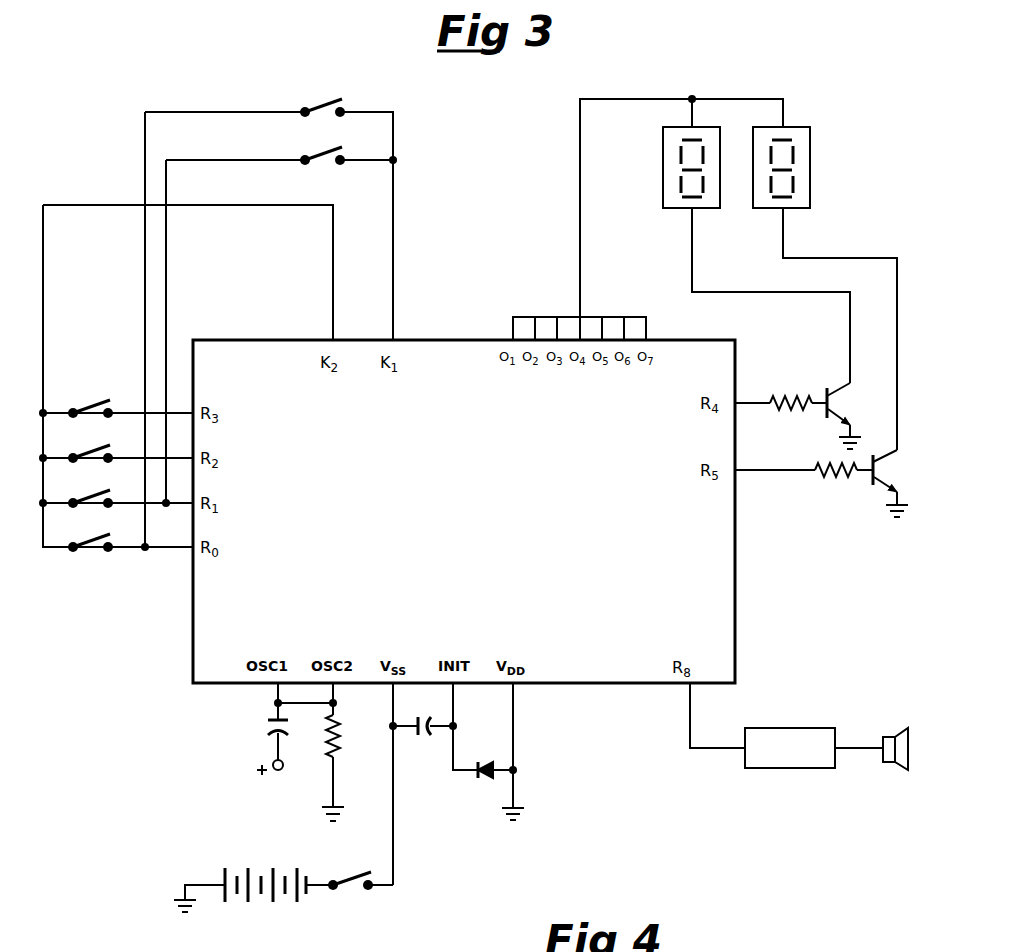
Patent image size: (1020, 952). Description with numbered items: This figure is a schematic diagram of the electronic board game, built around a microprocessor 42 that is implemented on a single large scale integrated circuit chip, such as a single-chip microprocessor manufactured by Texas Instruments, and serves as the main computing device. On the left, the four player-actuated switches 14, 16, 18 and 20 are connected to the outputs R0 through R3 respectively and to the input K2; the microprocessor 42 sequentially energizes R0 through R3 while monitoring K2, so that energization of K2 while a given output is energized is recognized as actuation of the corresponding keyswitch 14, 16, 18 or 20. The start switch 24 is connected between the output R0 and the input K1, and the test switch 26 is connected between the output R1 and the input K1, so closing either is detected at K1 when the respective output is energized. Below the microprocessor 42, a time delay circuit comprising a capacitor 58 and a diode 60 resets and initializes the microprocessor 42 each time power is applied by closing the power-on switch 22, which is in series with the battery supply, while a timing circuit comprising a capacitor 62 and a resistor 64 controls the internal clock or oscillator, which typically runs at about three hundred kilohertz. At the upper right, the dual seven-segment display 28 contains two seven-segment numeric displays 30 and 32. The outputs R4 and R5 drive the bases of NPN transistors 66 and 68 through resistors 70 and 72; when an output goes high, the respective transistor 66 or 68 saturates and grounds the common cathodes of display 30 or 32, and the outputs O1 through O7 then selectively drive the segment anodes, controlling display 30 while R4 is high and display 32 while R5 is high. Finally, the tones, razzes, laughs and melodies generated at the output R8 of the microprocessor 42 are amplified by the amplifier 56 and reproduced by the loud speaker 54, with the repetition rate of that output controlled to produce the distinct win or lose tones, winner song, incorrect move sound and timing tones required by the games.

The player-actuated switch 14 is at (98, 542).
The player-actuated switch 16 is at (98, 496).
The player-actuated switch 18 is at (96, 451).
The player-actuated switch 20 is at (92, 405).
The power-on switch 22 is at (352, 888).
The start switch 24 is at (326, 104).
The test switch 26 is at (326, 154).
The dual seven-segment display 28 is at (750, 88).
The seven-segment numeric display 30 is at (663, 153).
The seven-segment numeric display 32 is at (811, 139).
The microprocessor 42 is at (138, 605).
The loud speaker 54 is at (891, 767).
The amplifier 56 is at (794, 762).
The capacitor 58 is at (420, 738).
The diode 60 is at (486, 779).
The capacitor 62 is at (273, 733).
The resistor 64 is at (339, 742).
The NPN transistor 66 is at (829, 395).
The NPN transistor 68 is at (870, 477).
The resistor 70 is at (786, 397).
The resistor 72 is at (826, 478).